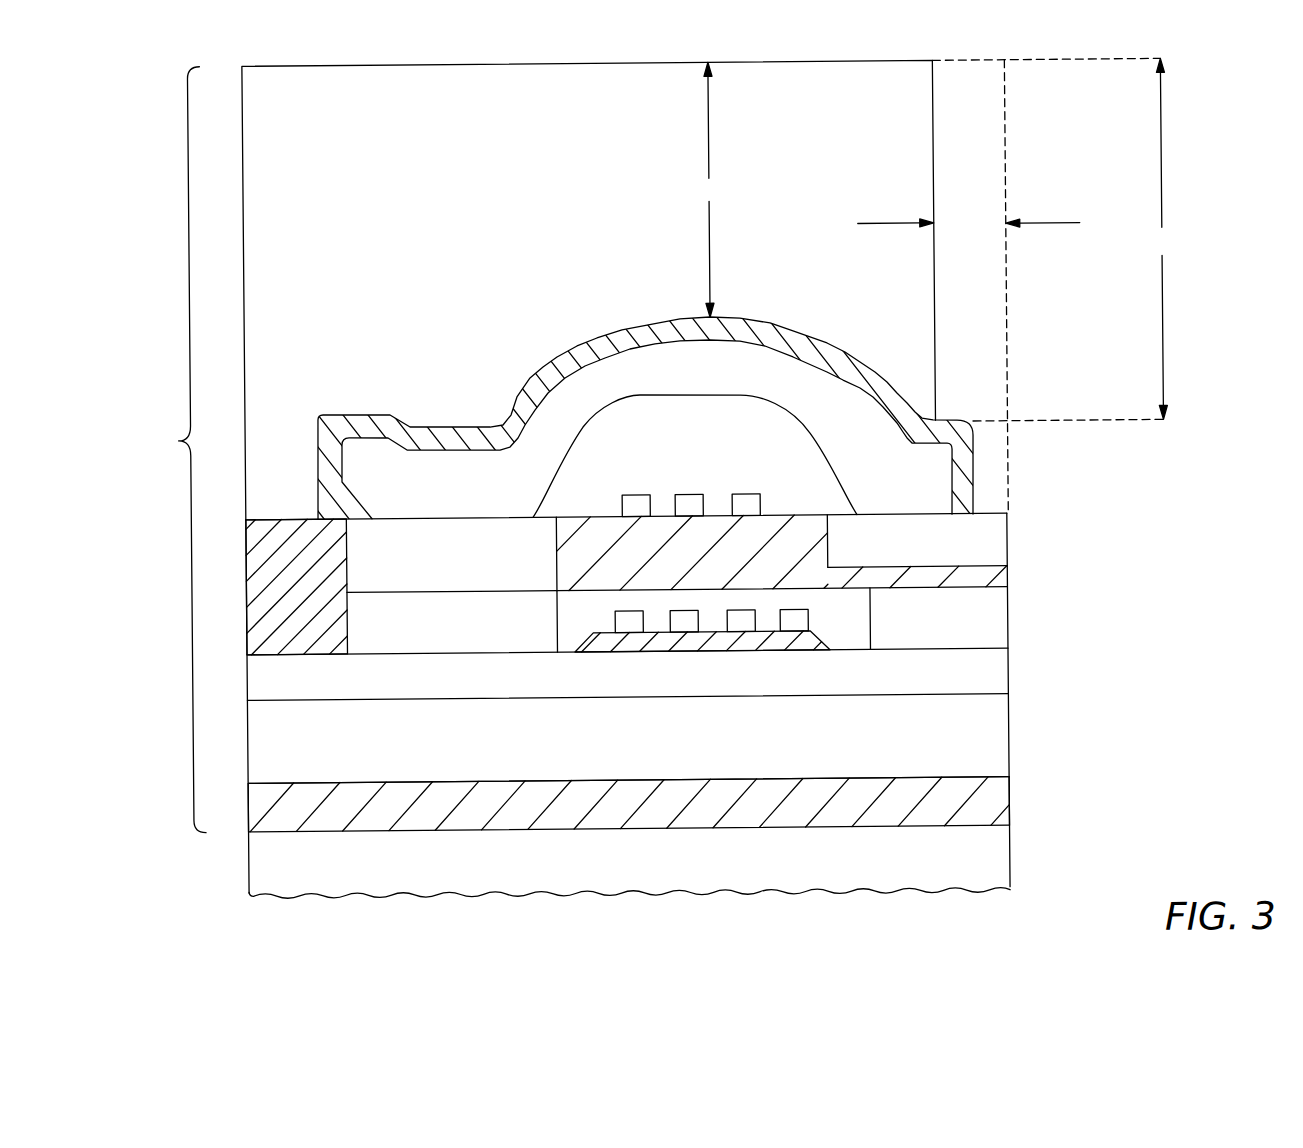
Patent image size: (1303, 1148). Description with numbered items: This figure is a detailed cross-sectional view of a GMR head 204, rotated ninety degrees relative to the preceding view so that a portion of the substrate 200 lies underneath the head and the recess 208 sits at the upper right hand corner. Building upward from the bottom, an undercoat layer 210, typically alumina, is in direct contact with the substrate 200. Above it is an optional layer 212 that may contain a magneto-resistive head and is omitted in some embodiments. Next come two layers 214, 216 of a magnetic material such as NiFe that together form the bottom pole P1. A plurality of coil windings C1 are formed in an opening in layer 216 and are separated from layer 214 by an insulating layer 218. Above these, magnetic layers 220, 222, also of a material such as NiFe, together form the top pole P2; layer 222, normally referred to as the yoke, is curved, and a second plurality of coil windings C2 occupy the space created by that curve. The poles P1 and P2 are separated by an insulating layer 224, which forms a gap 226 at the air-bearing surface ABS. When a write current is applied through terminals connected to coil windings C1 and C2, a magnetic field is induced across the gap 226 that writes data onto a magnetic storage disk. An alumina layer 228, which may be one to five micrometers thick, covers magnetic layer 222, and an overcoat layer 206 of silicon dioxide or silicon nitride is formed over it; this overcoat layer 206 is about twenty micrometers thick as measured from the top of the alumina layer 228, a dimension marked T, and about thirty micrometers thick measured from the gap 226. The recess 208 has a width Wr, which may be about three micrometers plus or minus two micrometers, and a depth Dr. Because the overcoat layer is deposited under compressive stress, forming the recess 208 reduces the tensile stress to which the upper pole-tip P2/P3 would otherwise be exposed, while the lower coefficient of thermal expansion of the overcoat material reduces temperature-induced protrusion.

The substrate 200 is at (1004, 888).
The GMR head 204 is at (167, 450).
The overcoat layer 206 is at (335, 135).
The recess 208 is at (1043, 164).
The undercoat layer 210 is at (1006, 806).
The layer 212 is at (342, 753).
The layer 214 is at (960, 682).
The layer 216 is at (486, 632).
The insulating layer 218 is at (704, 652).
The layer 220 is at (962, 554).
The layer 222 is at (924, 492).
The insulating layer 224 is at (787, 516).
The gap 226 is at (1022, 578).
The alumina layer 228 is at (788, 324).
The coil windings C1 is at (589, 606).
The coil windings C2 is at (670, 474).
The bottom pole P1 is at (1018, 592).
The top pole P2 is at (1006, 538).
The upper pole-tip P3 is at (973, 474).
The overcoat thickness T is at (709, 189).
The recess width Wr is at (969, 212).
The recess depth Dr is at (1162, 238).
The air-bearing surface ABS is at (1065, 836).